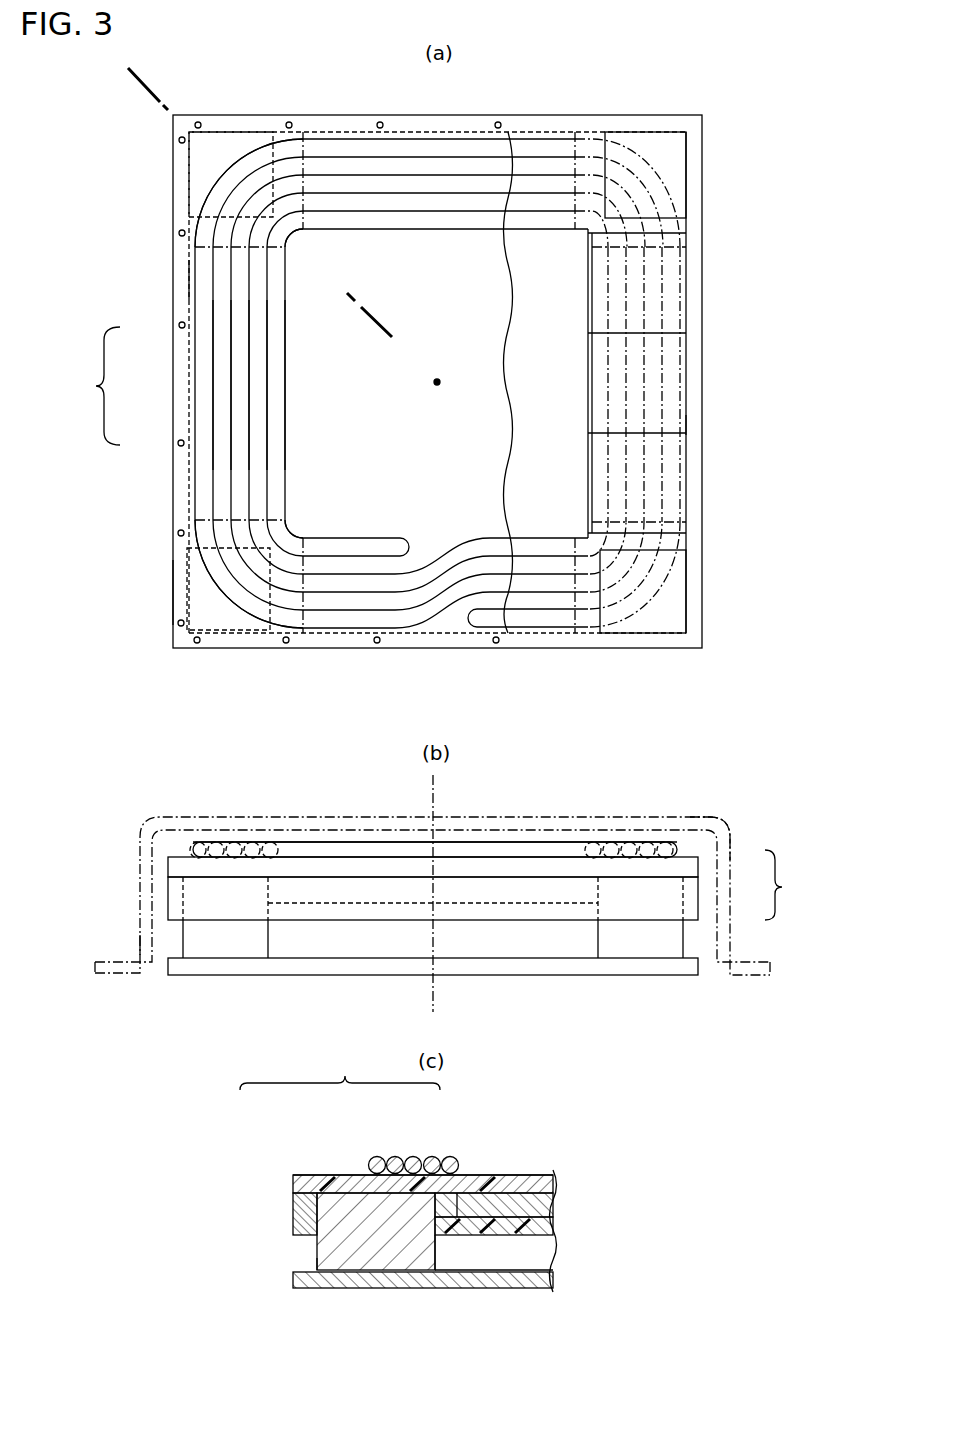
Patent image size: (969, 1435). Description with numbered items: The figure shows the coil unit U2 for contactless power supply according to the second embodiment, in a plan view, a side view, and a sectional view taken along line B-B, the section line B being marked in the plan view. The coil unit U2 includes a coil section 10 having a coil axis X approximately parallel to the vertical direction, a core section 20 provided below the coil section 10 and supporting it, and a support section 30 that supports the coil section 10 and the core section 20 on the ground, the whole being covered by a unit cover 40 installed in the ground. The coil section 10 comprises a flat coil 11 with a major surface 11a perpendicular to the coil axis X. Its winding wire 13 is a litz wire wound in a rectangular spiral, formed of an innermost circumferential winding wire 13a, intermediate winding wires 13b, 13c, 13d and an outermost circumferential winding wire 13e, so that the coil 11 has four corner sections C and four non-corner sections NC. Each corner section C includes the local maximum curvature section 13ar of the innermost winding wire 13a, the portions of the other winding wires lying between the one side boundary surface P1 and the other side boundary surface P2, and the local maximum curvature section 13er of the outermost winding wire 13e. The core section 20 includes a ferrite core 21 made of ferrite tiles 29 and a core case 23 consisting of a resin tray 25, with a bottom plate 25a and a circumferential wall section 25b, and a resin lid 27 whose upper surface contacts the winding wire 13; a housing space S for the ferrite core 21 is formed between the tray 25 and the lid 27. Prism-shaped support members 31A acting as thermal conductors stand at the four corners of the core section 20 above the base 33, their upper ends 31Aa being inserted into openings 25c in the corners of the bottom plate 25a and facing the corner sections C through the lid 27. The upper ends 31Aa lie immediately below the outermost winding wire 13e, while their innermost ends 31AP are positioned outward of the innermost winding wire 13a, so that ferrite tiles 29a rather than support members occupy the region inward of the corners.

The coil section 10 is at (190, 475).
The coil 11 is at (408, 140).
The major surface 11a is at (520, 868).
The winding wire 13 is at (373, 656).
The innermost circumferential winding wire 13a is at (285, 346).
The winding wire 13b is at (267, 368).
The winding wire 13c is at (249, 390).
The winding wire 13d is at (213, 433).
The outermost circumferential winding wire 13e is at (231, 410).
The local maximum curvature section 13ar is at (300, 240).
The local maximum curvature section 13er is at (276, 136).
The core section 20 is at (172, 579).
The ferrite core 21 is at (555, 905).
The core case 23 is at (788, 885).
The tray 25 is at (700, 900).
The bottom plate 25a is at (468, 920).
The circumferential wall section 25b is at (690, 428).
The openings 25c is at (268, 912).
The lid 27 is at (700, 862).
The ferrite tiles 29 is at (542, 140).
The ferrite tiles 29a is at (673, 223).
The support section 30 is at (183, 612).
The support member 31A is at (218, 136).
The innermost ends 31AP is at (600, 165).
The upper end 31Aa is at (193, 868).
The base plate 33 is at (698, 978).
The unit cover 40 is at (722, 822).
The coil axis X is at (441, 381).
The line B- B is at (142, 85).
The corner sections C is at (252, 138).
The non-corner sections NC is at (462, 133).
The one side boundary surface P1 is at (575, 140).
The other side boundary surface P2 is at (297, 133).
The housing space S is at (518, 905).
The coil unit U2 is at (170, 226).